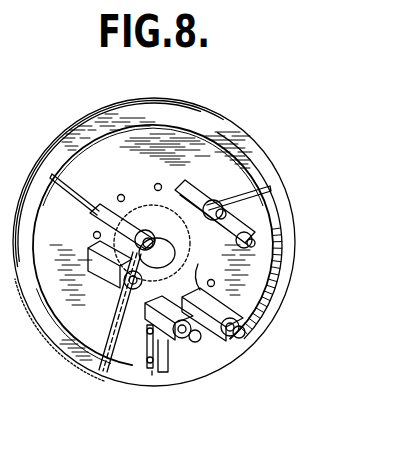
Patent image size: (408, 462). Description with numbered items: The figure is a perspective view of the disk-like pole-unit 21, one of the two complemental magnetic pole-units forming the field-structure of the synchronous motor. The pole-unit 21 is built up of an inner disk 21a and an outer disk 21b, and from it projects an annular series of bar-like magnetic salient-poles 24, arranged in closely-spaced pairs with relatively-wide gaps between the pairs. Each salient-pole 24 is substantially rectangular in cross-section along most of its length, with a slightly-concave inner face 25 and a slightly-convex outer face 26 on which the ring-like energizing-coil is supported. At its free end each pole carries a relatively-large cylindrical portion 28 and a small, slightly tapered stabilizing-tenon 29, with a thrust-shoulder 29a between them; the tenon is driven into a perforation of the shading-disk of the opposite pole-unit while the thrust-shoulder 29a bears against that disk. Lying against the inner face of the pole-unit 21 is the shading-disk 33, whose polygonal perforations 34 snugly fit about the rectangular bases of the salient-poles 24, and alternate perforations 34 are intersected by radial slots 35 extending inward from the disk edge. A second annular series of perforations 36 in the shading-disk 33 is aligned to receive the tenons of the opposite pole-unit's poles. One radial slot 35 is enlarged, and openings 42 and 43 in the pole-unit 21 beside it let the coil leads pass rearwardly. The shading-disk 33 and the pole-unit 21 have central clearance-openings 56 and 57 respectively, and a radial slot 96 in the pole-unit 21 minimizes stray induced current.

The disk-like pole-unit 21 is at (231, 126).
The inner disk 21a is at (66, 141).
The outer disk 21b is at (100, 111).
The salient-poles 24 is at (217, 302).
The concave inner face 25 is at (205, 268).
The convex outer face 26 is at (186, 189).
The cylindrical portion 28 is at (206, 387).
The stabilizing-tenon 29 is at (258, 250).
The thrust-shoulder 29a is at (252, 228).
The shading-disk 33 is at (64, 313).
The polygonal perforations 34 is at (93, 235).
The radial slot 35 is at (90, 206).
The perforations 36 is at (154, 185).
The opening 42 is at (150, 340).
The opening 43 is at (152, 371).
The clearance-opening 56 is at (152, 243).
The clearance-opening 57 is at (157, 253).
The radial slot 96 is at (95, 369).